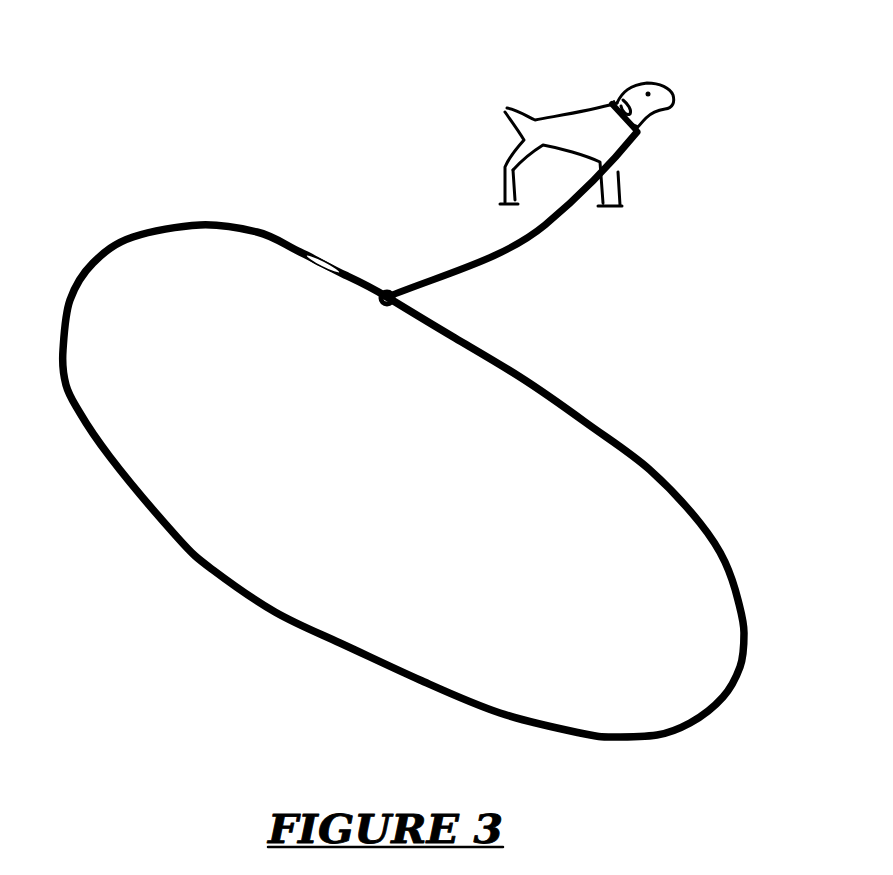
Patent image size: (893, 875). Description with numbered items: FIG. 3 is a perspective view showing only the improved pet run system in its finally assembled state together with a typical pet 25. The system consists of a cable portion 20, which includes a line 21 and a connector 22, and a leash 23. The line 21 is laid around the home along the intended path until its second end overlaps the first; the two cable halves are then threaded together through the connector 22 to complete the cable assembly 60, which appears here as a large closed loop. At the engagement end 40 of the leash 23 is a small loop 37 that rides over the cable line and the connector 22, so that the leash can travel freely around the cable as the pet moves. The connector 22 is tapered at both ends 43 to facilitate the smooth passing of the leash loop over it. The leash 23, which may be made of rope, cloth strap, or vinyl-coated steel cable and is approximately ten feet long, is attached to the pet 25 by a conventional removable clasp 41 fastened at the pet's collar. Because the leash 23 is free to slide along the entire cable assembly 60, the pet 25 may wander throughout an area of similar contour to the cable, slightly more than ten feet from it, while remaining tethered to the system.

The cable portion 20 is at (177, 537).
The line 21 is at (213, 570).
The cable assembly 60 is at (270, 610).
The connector 22 is at (317, 270).
The tapered ends 43 is at (307, 250).
The engagement end 40 is at (393, 287).
The small loop 37 is at (383, 313).
The leash 23 is at (530, 242).
The pet 25 is at (570, 113).
The removable clasp 41 is at (640, 130).